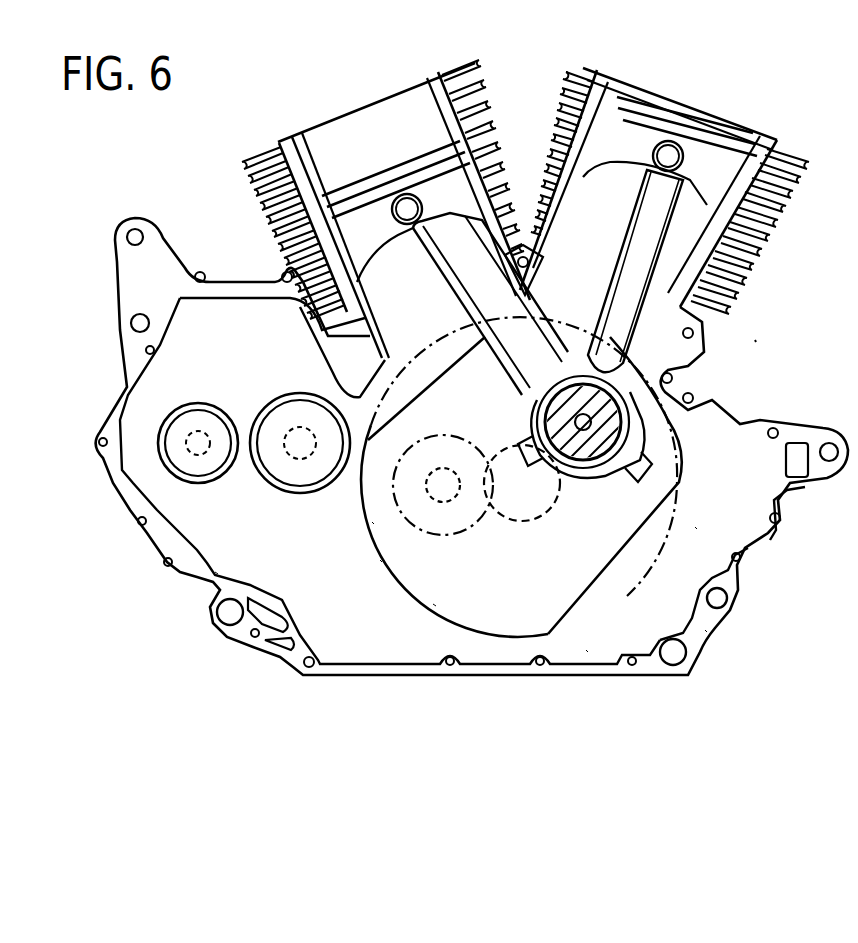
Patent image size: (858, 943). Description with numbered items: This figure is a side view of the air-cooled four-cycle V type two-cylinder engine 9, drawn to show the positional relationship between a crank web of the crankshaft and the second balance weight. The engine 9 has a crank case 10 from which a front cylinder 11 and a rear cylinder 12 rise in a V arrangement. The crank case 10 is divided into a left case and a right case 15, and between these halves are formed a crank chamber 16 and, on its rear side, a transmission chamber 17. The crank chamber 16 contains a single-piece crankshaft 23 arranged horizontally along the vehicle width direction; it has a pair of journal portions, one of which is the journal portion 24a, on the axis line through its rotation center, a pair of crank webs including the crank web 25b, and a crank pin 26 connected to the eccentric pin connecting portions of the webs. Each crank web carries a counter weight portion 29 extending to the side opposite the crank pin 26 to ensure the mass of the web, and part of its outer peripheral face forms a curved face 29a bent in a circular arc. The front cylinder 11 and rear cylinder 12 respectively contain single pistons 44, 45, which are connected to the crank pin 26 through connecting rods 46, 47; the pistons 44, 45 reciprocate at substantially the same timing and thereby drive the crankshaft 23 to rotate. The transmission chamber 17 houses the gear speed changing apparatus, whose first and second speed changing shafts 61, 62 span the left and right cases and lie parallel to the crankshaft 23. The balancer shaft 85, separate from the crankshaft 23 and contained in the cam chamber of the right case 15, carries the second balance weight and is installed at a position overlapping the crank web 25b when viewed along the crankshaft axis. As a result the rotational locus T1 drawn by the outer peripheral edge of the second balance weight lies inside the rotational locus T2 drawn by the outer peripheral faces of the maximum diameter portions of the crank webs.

The engine 9 is at (775, 307).
The crank case 10 is at (690, 372).
The front cylinder 11 is at (763, 145).
The rear cylinder 12 is at (292, 149).
The right case 15 is at (707, 632).
The crank chamber 16 is at (587, 648).
The transmission chamber 17 is at (218, 570).
The crankshaft 23 is at (662, 460).
The journal portion 24a is at (513, 495).
The crank web 25b is at (437, 605).
The crank pin 26 is at (583, 455).
The counter weight portion 29 is at (507, 626).
The curved face 29a is at (387, 560).
The piston 44 is at (683, 113).
The piston 45 is at (393, 172).
The connecting rod 46 is at (627, 240).
The connecting rod 47 is at (446, 275).
The first speed changing shaft 61 is at (292, 428).
The second speed changing shaft 62 is at (197, 430).
The balancer shaft 85 is at (442, 478).
The rotational locus T1 is at (372, 522).
The rotational locus T2 is at (695, 527).